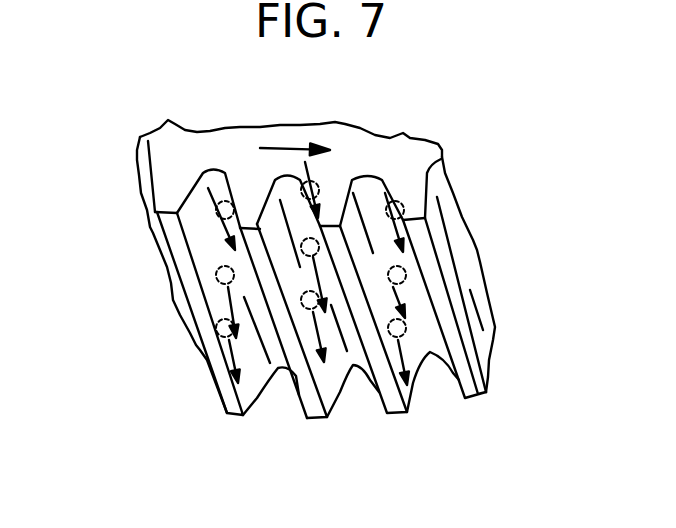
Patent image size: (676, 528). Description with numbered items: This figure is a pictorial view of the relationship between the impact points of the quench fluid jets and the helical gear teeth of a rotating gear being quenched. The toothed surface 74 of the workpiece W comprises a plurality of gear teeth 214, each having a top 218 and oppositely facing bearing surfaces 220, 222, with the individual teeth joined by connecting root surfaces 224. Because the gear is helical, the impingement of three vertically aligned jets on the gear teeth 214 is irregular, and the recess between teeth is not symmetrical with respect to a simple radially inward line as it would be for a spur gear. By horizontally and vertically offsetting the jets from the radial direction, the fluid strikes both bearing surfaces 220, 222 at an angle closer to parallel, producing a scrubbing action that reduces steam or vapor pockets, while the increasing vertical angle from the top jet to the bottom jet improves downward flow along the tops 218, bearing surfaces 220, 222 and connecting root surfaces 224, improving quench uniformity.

The workpiece W is at (128, 128).
The gear teeth 214 is at (248, 184).
The toothed surface 74 is at (176, 296).
The tops 218 is at (307, 396).
The bearing surface 222 is at (328, 394).
The connecting root surfaces 224 is at (350, 355).
The bearing surface 220 is at (455, 373).